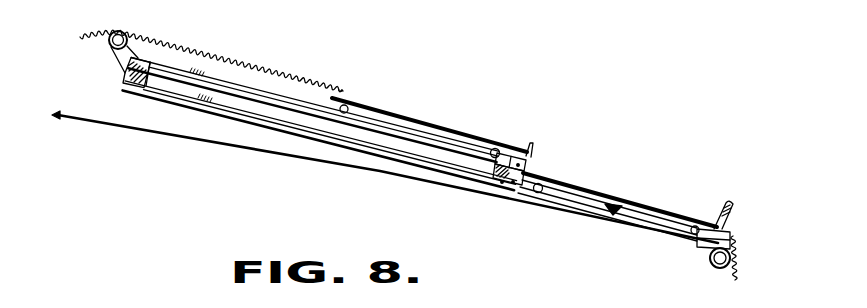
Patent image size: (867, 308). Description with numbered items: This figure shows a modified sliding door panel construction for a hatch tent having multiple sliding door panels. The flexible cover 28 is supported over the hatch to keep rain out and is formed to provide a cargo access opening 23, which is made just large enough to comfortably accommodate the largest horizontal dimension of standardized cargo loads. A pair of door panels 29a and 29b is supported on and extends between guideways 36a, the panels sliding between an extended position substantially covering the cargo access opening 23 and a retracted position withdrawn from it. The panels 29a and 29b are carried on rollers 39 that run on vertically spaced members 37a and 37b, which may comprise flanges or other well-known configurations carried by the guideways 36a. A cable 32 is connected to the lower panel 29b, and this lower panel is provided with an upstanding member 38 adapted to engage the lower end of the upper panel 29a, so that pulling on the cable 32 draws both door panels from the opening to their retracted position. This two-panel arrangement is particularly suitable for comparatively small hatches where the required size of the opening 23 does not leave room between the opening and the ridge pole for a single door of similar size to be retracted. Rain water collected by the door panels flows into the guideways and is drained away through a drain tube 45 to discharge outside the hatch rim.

The flexible cover 28 is at (162, 36).
The vertically spaced member 37a is at (203, 80).
The vertically spaced member 37b is at (187, 100).
The guideway 36a is at (267, 130).
The cargo access opening 23 is at (342, 90).
The door panel 29a is at (433, 122).
The door panel 29b is at (587, 190).
The cable 32 is at (288, 158).
The roller 39 is at (348, 108).
The upstanding member 38 is at (733, 208).
The drain tube 45 is at (720, 270).